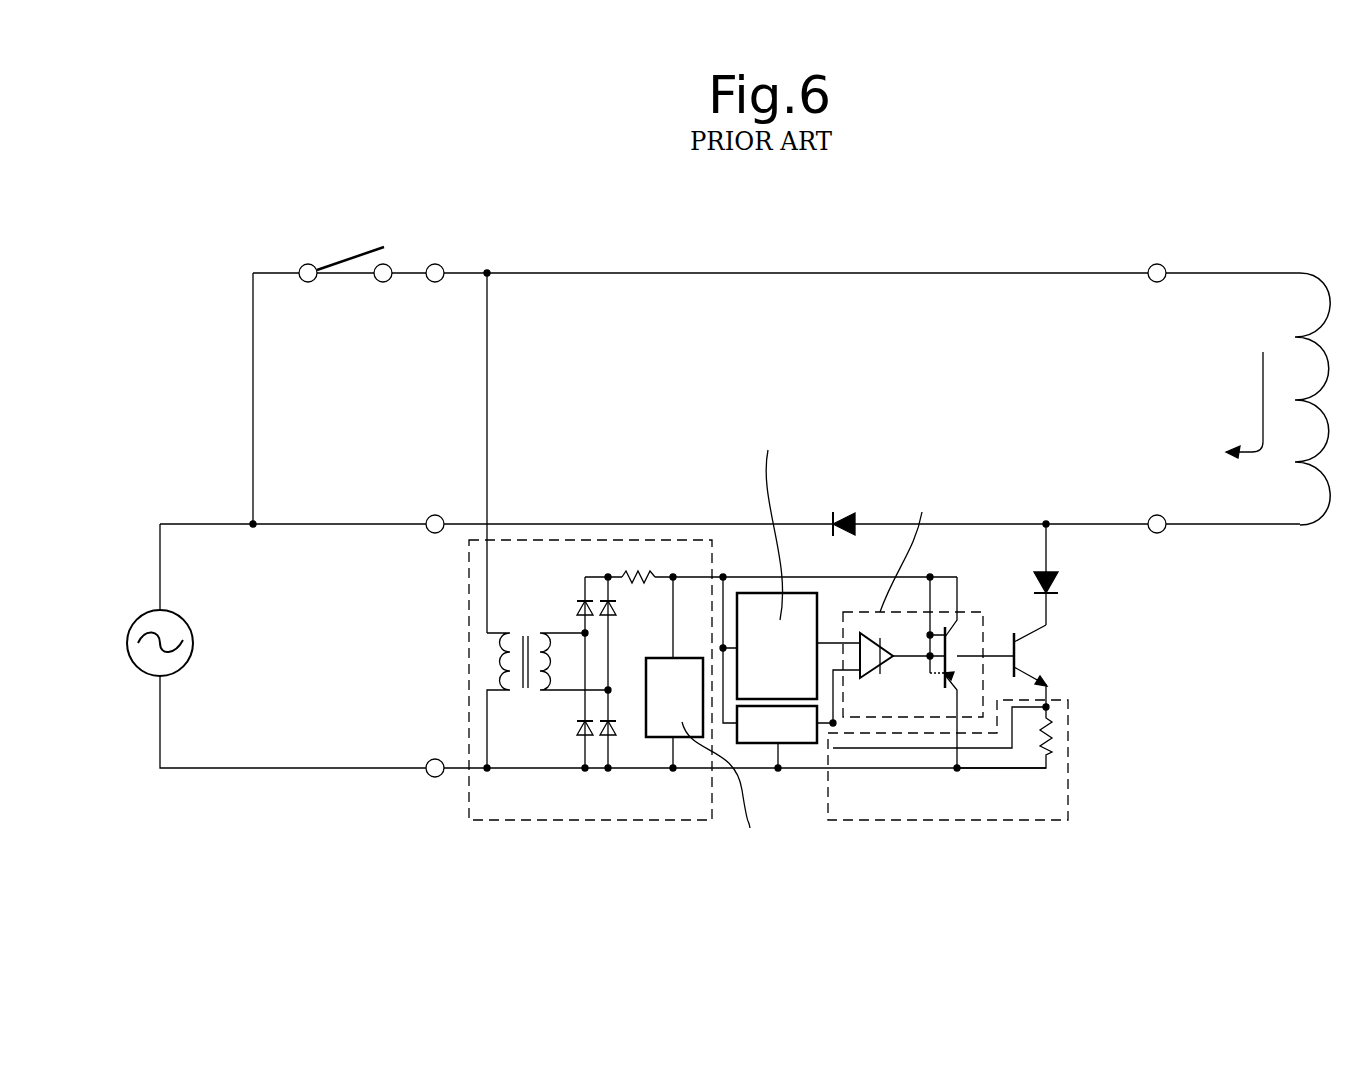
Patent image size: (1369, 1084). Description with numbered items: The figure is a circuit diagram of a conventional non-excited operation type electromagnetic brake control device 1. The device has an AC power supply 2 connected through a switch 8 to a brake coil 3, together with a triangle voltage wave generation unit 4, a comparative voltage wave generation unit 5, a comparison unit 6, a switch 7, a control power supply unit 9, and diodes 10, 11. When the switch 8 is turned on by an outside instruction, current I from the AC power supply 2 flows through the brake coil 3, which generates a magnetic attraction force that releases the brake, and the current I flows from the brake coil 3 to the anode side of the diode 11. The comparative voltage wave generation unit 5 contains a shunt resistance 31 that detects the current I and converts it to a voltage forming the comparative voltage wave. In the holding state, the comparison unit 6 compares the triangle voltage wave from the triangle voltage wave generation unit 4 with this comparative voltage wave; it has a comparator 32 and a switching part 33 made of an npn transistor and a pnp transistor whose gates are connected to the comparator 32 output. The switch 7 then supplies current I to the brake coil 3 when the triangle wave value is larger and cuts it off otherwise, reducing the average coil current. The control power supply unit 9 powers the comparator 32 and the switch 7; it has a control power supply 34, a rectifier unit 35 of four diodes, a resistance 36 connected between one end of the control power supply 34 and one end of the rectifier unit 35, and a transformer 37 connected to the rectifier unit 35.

The non-excited operation type electromagnetic brake control device 1 is at (690, 228).
The AC power supply 2 is at (192, 624).
The brake coil 3 is at (1320, 342).
The triangle voltage wave generation unit 4 is at (817, 620).
The comparative voltage wave generation unit 5 is at (870, 822).
The comparison unit 6 is at (988, 635).
The switch 7 is at (1040, 648).
The switch 8 is at (350, 258).
The control power supply unit 9 is at (672, 822).
The diode 10 is at (848, 510).
The diode 11 is at (1060, 583).
The shunt resistance 31 is at (1052, 736).
The comparator 32 is at (878, 670).
The switching part 33 is at (962, 650).
The control power supply 34 is at (660, 658).
The rectifier unit 35 is at (602, 562).
The resistance 36 is at (644, 569).
The transformer 37 is at (524, 618).